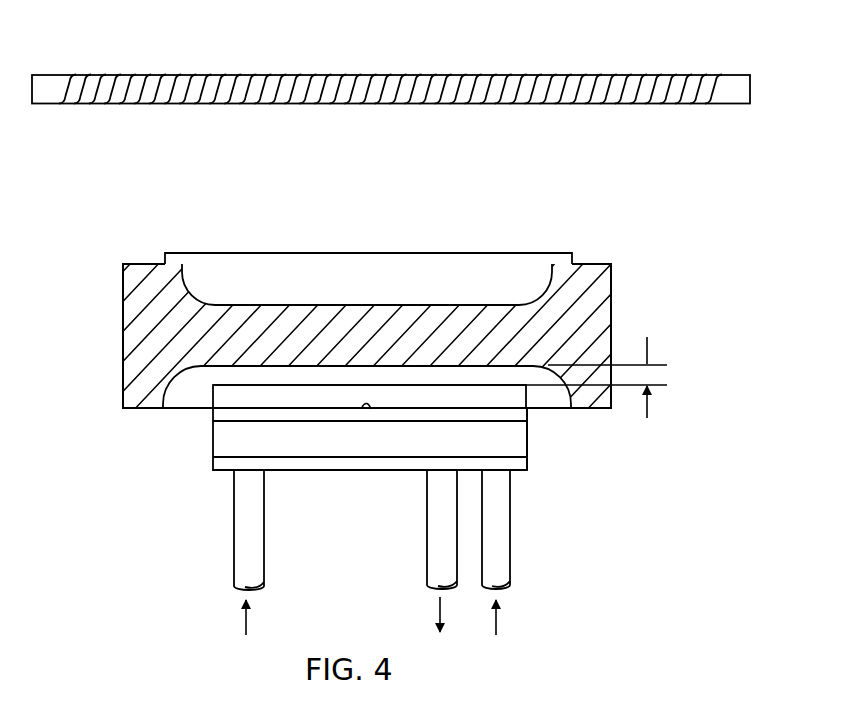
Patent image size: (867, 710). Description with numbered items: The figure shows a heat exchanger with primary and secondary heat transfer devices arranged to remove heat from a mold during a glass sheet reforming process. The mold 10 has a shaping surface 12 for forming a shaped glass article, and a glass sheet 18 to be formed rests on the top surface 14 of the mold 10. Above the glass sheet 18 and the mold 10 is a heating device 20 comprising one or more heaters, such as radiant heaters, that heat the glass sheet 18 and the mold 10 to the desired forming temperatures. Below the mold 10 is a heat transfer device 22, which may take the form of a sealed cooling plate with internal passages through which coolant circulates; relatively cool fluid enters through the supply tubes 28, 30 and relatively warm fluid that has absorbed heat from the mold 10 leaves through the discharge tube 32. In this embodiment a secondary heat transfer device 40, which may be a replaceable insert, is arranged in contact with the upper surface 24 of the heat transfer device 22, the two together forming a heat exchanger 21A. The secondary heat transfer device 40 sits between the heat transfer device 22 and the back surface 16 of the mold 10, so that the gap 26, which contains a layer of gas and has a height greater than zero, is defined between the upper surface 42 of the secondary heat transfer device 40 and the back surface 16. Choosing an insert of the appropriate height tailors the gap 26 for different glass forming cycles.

The mold 10 is at (613, 308).
The shaping surface 12 is at (492, 304).
The top surface 14 is at (143, 263).
The back surface 16 is at (325, 367).
The glass sheet 18 is at (343, 253).
The heating device 20 is at (432, 73).
The heat exchanger 21A is at (531, 446).
The heat transfer device 22 is at (209, 443).
The upper surface 24 is at (371, 409).
The gap 26 is at (596, 389).
The supply tube 28 is at (264, 547).
The supply tube 30 is at (512, 540).
The discharge tube 32 is at (427, 563).
The secondary heat transfer device 40 is at (217, 397).
The upper surface 42 is at (412, 384).